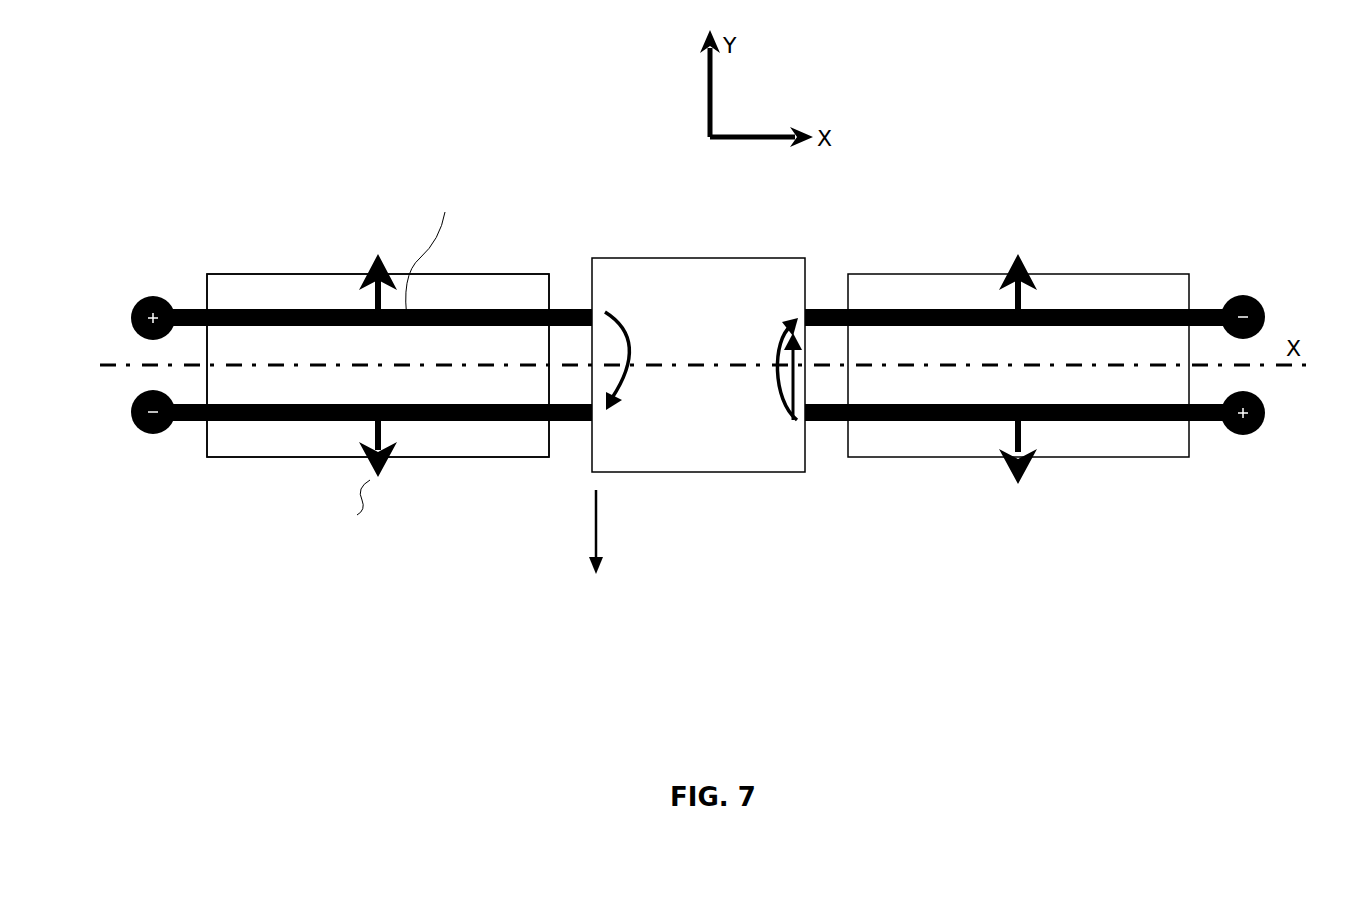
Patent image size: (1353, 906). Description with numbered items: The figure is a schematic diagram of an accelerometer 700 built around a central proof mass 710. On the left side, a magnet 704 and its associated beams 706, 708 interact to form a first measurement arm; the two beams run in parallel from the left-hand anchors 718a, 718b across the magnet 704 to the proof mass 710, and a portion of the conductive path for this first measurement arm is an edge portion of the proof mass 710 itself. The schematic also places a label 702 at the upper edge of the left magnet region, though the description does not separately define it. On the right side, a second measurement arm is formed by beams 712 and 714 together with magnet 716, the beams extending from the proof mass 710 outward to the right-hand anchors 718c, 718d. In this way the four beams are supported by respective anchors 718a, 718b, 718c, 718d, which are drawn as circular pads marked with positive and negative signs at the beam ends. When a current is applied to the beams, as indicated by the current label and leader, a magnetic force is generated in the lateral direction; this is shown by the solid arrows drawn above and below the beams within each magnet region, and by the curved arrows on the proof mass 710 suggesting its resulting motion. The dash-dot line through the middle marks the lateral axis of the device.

The accelerometer 700 is at (514, 44).
The first magnet 702 is at (523, 273).
The magnet 704 is at (258, 445).
The beam 706 is at (568, 308).
The beam 708 is at (568, 423).
The proof mass 710 is at (698, 365).
The beam 712 is at (818, 308).
The beam 714 is at (825, 422).
The magnet 716 is at (880, 273).
The anchor 718a is at (175, 293).
The anchor 718b is at (152, 437).
The anchor 718c is at (1240, 295).
The anchor 718d is at (1228, 437).